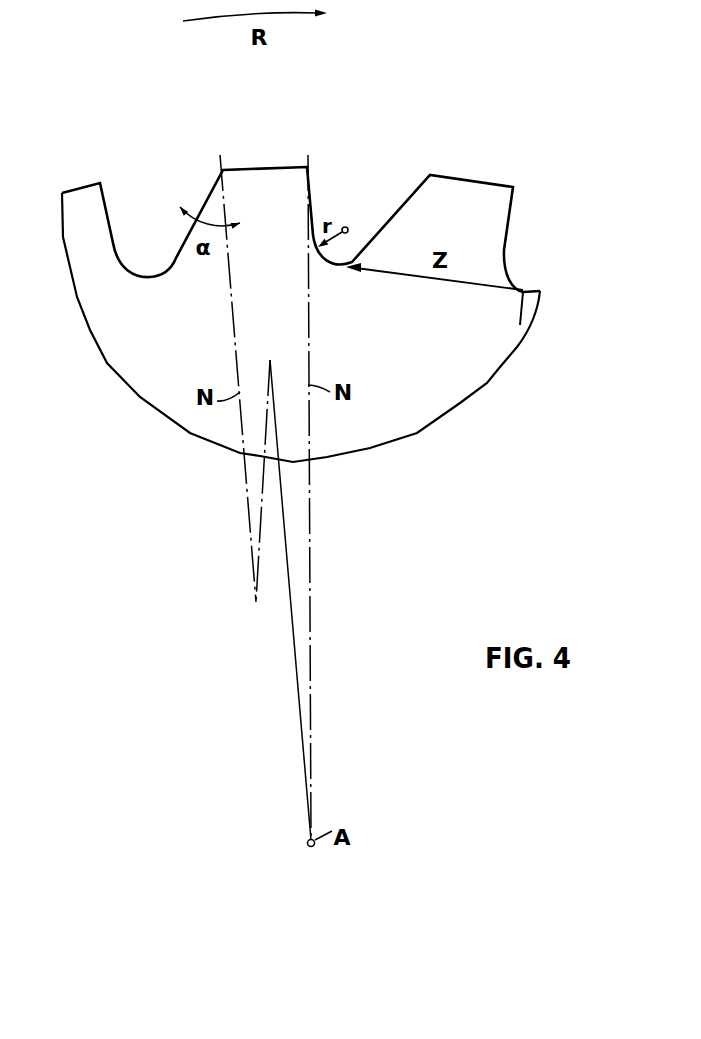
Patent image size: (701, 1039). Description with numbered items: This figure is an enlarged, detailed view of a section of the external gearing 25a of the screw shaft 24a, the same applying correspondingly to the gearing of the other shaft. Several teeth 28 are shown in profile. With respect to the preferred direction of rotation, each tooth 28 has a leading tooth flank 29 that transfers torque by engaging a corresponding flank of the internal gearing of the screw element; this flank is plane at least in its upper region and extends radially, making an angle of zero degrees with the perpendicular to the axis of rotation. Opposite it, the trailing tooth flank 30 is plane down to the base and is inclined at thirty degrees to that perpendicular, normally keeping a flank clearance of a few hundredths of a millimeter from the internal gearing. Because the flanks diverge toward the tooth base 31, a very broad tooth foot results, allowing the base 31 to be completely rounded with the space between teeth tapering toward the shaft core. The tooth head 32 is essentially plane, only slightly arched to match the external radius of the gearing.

The screw shaft 24a is at (470, 380).
The external gearing 25a is at (437, 120).
The tooth 28 is at (280, 185).
The leading tooth flank 29 is at (321, 181).
The trailing tooth flank 30 is at (196, 188).
The tooth base 31 is at (130, 255).
The tooth head 32 is at (245, 166).